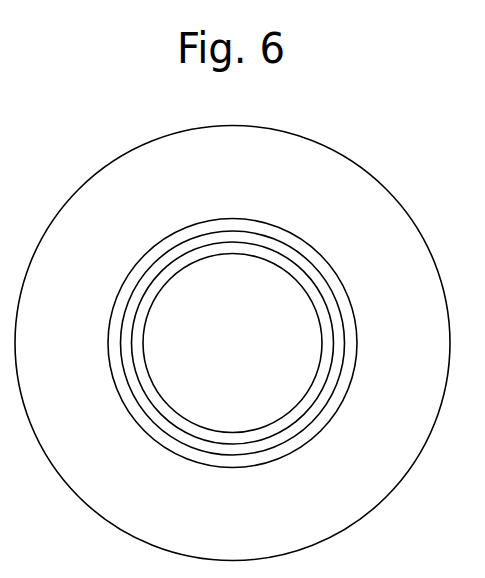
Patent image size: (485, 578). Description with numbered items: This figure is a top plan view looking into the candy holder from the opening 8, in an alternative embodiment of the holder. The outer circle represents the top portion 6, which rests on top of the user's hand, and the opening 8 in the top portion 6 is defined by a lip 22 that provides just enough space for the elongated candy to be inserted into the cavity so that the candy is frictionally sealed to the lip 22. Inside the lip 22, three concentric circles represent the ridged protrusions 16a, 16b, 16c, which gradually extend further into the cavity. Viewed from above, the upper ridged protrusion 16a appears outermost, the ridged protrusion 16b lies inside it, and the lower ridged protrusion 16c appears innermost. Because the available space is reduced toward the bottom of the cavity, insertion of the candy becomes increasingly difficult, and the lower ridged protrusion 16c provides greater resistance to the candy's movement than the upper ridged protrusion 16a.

The top portion 6 is at (410, 350).
The opening 8 is at (216, 276).
The lip 22 is at (338, 273).
The ridged protrusion 16a is at (330, 398).
The ridged protrusion 16b is at (287, 427).
The ridged protrusion 16c is at (245, 433).